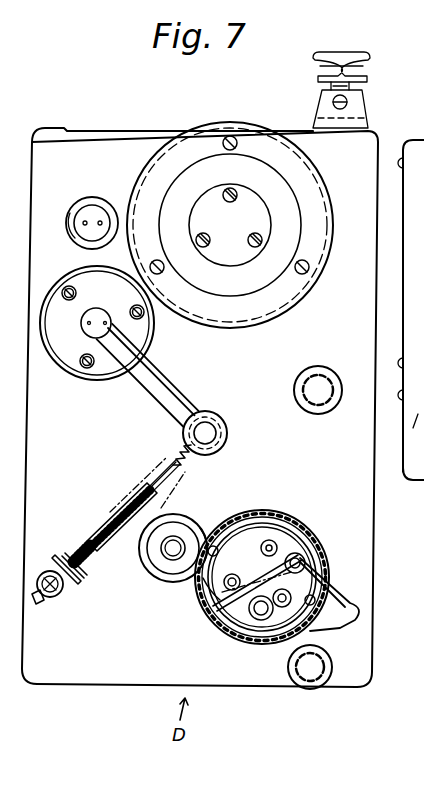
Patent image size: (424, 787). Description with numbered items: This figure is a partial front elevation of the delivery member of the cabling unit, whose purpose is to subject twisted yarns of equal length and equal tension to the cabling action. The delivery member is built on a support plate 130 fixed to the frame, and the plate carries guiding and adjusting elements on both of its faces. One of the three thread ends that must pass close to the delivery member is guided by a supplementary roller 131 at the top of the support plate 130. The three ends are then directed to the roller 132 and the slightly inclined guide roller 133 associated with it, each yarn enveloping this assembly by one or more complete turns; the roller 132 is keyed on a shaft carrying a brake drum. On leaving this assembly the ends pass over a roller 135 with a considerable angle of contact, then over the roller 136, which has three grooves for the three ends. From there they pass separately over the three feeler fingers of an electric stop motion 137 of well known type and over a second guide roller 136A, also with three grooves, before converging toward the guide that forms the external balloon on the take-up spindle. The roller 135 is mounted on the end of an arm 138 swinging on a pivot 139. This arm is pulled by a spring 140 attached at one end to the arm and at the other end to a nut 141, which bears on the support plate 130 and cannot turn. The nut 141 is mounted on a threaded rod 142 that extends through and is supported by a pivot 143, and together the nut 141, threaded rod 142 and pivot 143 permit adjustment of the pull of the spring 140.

The support plate 130 is at (131, 145).
The supplementary roller 131 is at (311, 76).
The roller 132 is at (194, 137).
The guide roller 133 is at (88, 197).
The roller 135 is at (185, 435).
The roller 136 is at (303, 410).
The second guide roller 136A is at (333, 670).
The electric stop motion 137 is at (333, 588).
The arm 138 is at (157, 382).
The pivot 139 is at (85, 330).
The spring 140 is at (177, 450).
The nut 141 is at (78, 584).
The threaded rod 142 is at (108, 540).
The pivot 143 is at (53, 597).